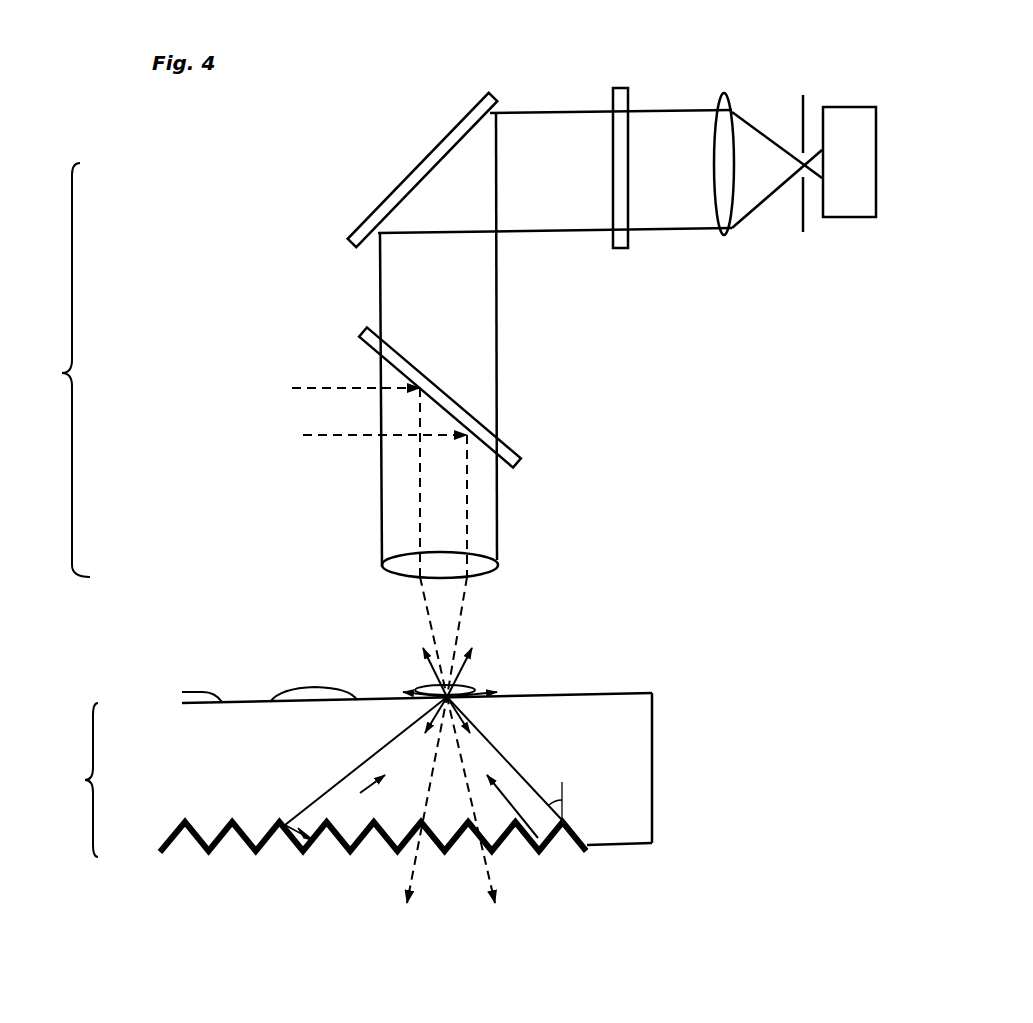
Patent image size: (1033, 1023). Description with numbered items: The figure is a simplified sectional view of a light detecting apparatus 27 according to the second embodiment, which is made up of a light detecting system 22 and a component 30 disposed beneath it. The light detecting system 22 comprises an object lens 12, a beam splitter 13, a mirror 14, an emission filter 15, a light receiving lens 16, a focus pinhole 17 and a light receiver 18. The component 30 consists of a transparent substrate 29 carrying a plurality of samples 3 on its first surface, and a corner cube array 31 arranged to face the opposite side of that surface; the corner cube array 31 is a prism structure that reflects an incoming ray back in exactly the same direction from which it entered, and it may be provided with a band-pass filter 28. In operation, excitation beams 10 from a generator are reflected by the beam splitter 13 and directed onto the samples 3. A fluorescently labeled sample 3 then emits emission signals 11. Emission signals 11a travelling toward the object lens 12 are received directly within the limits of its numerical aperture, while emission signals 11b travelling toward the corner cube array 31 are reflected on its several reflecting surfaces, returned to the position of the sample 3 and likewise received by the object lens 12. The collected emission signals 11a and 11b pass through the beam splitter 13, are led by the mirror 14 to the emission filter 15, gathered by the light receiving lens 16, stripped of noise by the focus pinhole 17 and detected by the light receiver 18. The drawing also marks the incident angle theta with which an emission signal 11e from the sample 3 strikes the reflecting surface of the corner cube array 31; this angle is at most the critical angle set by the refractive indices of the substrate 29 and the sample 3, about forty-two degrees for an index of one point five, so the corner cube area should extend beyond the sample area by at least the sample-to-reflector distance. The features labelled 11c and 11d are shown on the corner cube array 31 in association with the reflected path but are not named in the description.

The sample 3 is at (318, 684).
The excitation beam 10 is at (354, 645).
The emission signal 11 is at (575, 641).
The emission signal 11a is at (462, 668).
The emission signal 11b is at (493, 697).
The reflection surface 11c is at (288, 848).
The reflected scattered light 11d is at (320, 826).
The emission signal 11e is at (504, 767).
The object lens 12 is at (420, 567).
The beam splitter 13 is at (466, 411).
The mirror 14 is at (423, 170).
The emission filter 15 is at (624, 195).
The light receiving lens 16 is at (768, 190).
The focus pinhole 17 is at (799, 184).
The light receiver 18 is at (867, 162).
The light detecting system 22 is at (55, 370).
The light detecting apparatus 27 is at (473, 1003).
The band-pass filter 28 is at (200, 850).
The transparent substrate 29 is at (633, 746).
The component 30 is at (70, 780).
The corner cube array 31 is at (170, 840).